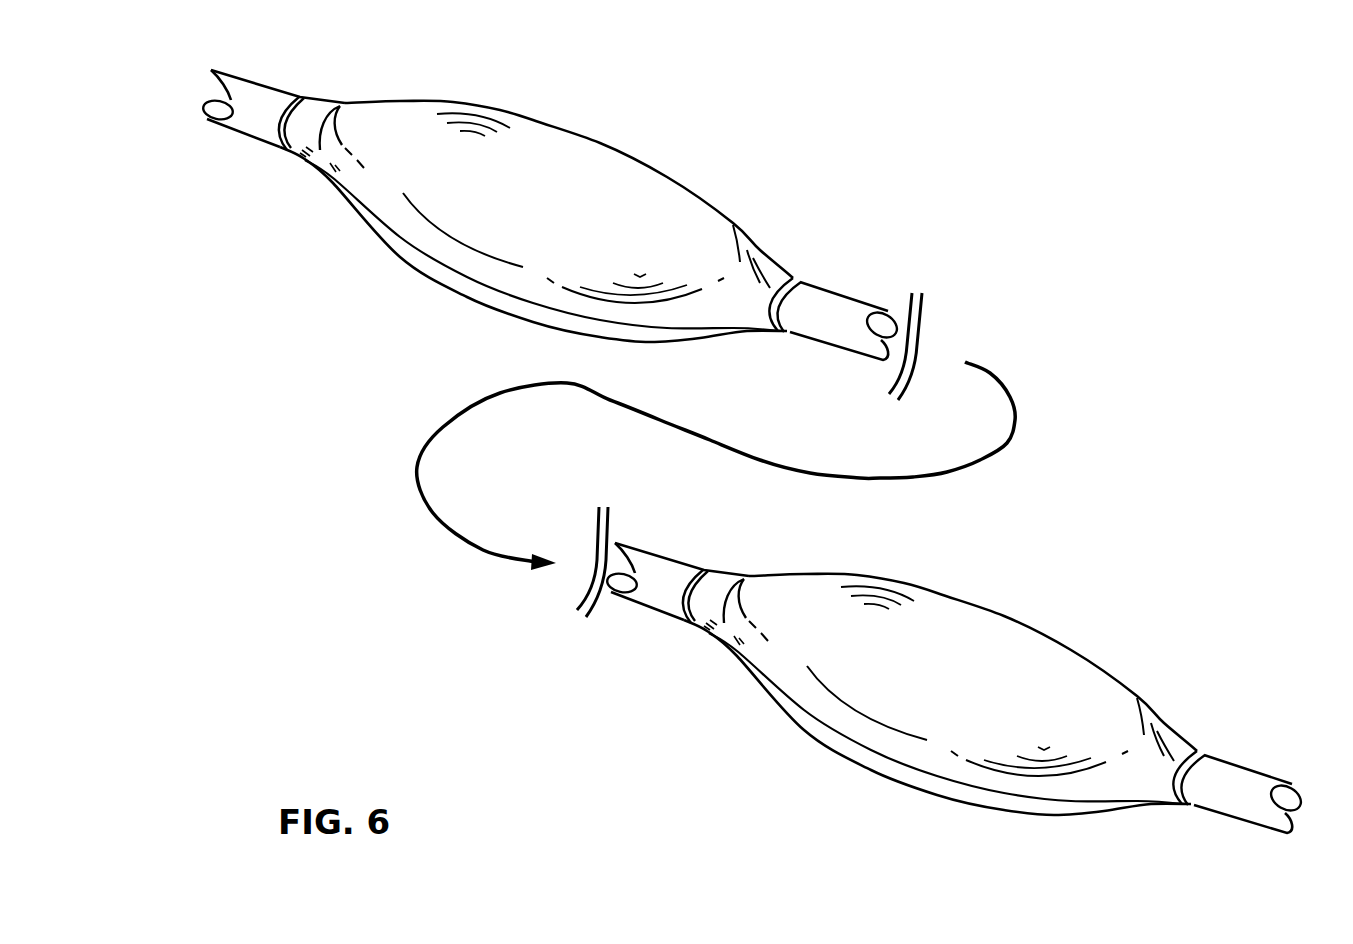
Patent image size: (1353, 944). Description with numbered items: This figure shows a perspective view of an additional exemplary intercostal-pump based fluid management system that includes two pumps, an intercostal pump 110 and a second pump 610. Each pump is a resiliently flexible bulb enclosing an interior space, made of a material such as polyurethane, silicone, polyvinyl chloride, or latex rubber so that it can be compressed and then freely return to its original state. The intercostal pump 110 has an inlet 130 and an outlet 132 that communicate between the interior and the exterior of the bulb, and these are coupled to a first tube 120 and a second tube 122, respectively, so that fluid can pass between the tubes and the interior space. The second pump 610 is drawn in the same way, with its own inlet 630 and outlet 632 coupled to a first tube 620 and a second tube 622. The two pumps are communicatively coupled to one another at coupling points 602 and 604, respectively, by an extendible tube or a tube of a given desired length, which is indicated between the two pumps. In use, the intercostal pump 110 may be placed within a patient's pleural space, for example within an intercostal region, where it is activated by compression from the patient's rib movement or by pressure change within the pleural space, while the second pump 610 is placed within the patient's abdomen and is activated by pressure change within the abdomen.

The intercostal pump 110 is at (527, 116).
The first tube 120 is at (287, 69).
The second tube 122 is at (842, 296).
The inlet 130 is at (301, 95).
The outlet 132 is at (793, 276).
The coupling point 602 is at (922, 327).
The coupling point 604 is at (617, 552).
The pump 610 is at (940, 684).
The first tube 620 is at (677, 571).
The second tube 622 is at (1249, 782).
The inlet 630 is at (731, 579).
The outlet 632 is at (1212, 758).